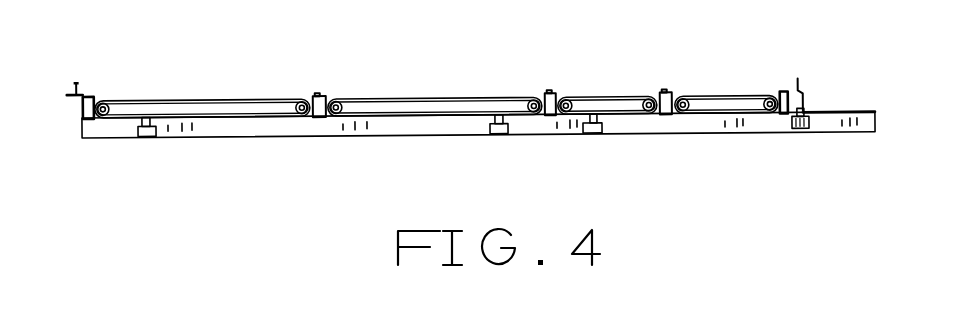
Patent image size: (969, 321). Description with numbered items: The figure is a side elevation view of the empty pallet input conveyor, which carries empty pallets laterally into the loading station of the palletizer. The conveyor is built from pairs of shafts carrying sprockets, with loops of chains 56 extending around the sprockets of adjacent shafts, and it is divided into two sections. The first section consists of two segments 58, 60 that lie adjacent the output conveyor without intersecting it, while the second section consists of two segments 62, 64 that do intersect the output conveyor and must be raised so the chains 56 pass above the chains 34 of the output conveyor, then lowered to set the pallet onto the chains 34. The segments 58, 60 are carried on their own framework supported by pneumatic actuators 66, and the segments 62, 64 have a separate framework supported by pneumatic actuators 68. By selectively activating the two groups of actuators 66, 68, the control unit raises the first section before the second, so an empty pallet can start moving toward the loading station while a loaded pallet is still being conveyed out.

The chains of the output conveyor 34 is at (547, 93).
The chains of the input conveyor 56 is at (283, 100).
The first segment of the input conveyor first section 58 is at (179, 86).
The second segment of the input conveyor first section 60 is at (419, 86).
The first segment of the input conveyor second section 62 is at (599, 85).
The second segment of the input conveyor second section 64 is at (725, 86).
The pneumatic actuators 66 is at (142, 138).
The pneumatic actuators 68 is at (593, 133).